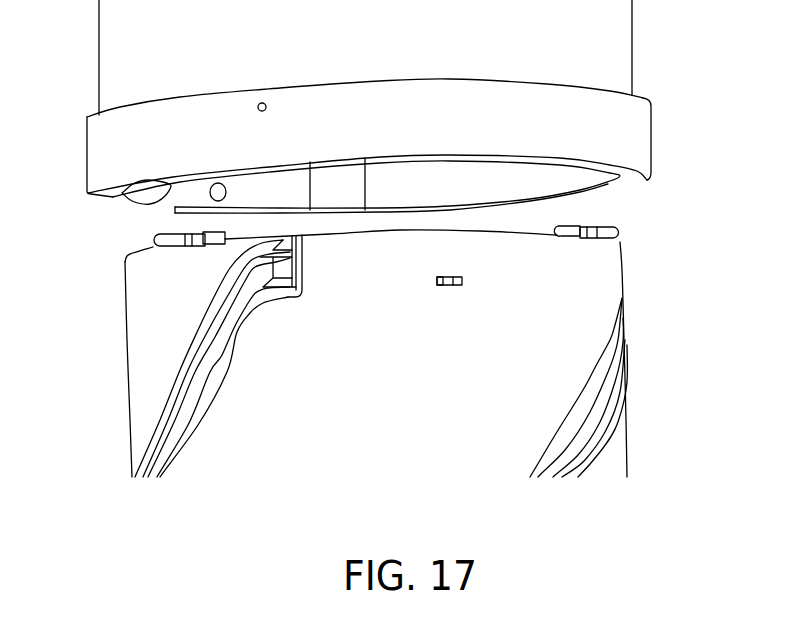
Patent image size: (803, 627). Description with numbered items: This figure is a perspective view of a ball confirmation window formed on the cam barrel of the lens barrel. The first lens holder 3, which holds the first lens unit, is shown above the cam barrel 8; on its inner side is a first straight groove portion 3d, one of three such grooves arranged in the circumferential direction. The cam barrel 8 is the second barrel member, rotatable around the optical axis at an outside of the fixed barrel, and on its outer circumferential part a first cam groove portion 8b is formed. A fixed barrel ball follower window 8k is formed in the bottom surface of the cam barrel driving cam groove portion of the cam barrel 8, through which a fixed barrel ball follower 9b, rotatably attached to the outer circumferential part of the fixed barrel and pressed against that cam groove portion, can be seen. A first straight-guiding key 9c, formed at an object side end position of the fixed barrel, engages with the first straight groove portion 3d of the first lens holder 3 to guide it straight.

The first lens holder 3 is at (608, 30).
The first straight groove portion 3d is at (160, 203).
The cam barrel 8 is at (600, 276).
The first cam groove portion 8b is at (245, 308).
The fixed barrel ball follower window 8k is at (461, 286).
The fixed barrel ball follower 9b is at (440, 286).
The first straight-guiding key 9c is at (177, 238).